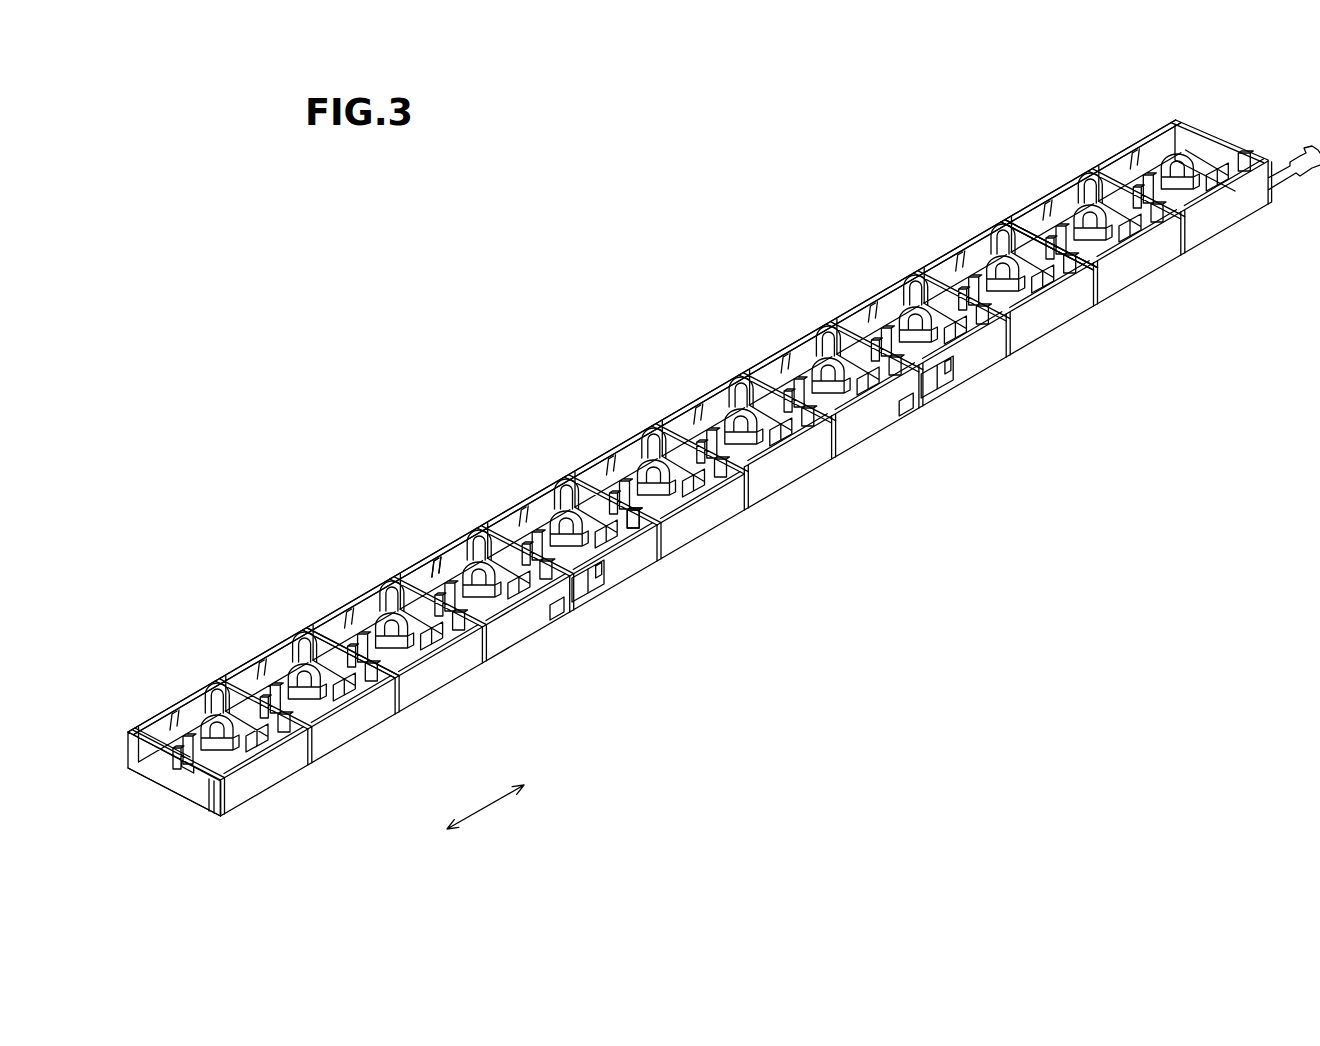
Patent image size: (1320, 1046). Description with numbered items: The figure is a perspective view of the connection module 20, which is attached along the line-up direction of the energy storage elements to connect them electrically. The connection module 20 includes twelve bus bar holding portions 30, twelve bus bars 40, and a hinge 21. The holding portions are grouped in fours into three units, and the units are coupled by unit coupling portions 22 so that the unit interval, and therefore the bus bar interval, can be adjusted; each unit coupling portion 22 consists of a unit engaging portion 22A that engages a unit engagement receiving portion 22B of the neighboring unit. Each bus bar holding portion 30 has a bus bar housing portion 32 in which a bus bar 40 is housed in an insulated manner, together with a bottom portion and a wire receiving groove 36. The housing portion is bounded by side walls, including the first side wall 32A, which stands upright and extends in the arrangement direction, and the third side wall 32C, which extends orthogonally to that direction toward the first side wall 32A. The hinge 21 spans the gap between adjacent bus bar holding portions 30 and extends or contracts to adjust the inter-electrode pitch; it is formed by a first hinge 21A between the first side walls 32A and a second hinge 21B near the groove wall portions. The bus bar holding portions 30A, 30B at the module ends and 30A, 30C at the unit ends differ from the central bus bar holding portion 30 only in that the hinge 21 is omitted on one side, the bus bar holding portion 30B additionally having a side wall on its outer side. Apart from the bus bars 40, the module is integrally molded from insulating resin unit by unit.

The connection module 20 is at (940, 665).
The hinge 21 is at (637, 360).
The first hinge 21A is at (565, 479).
The second hinge 21B is at (634, 510).
The unit coupling portion 22 is at (638, 692).
The unit engaging portion 22A is at (562, 612).
The unit engagement receiving portion 22B is at (599, 594).
The bus bar holding portion 30 is at (252, 646).
The bus bar holding portion 30A is at (840, 300).
The bus bar holding portion 30B is at (1122, 131).
The bus bar holding portion 30C is at (414, 550).
The bus bar housing portion 32 is at (338, 605).
The first side wall 32A is at (441, 545).
The third side wall 32C is at (157, 765).
The wire receiving groove 36 is at (204, 819).
The bus bar 40 is at (895, 322).